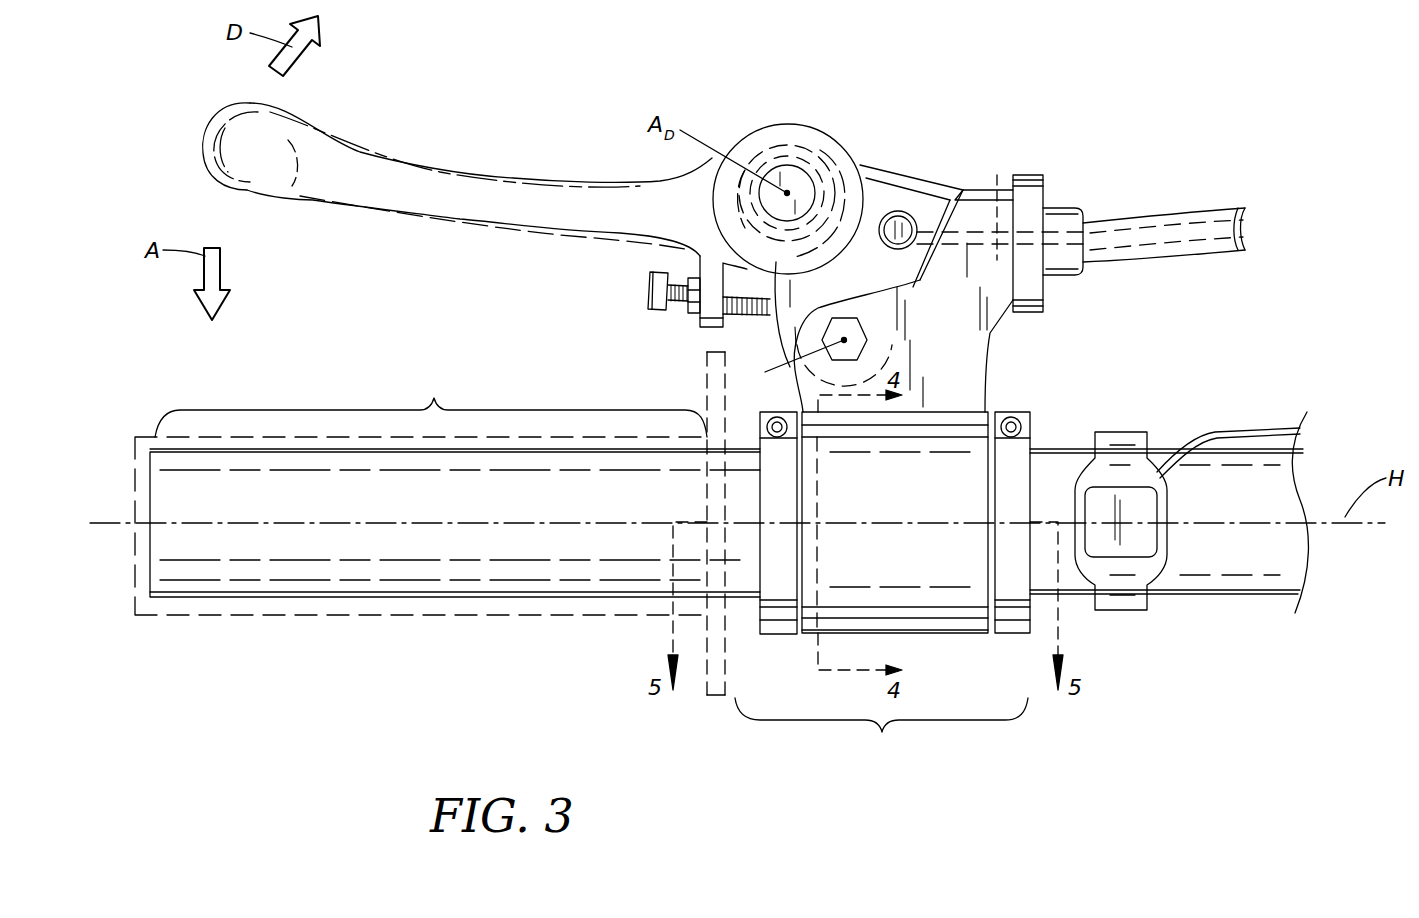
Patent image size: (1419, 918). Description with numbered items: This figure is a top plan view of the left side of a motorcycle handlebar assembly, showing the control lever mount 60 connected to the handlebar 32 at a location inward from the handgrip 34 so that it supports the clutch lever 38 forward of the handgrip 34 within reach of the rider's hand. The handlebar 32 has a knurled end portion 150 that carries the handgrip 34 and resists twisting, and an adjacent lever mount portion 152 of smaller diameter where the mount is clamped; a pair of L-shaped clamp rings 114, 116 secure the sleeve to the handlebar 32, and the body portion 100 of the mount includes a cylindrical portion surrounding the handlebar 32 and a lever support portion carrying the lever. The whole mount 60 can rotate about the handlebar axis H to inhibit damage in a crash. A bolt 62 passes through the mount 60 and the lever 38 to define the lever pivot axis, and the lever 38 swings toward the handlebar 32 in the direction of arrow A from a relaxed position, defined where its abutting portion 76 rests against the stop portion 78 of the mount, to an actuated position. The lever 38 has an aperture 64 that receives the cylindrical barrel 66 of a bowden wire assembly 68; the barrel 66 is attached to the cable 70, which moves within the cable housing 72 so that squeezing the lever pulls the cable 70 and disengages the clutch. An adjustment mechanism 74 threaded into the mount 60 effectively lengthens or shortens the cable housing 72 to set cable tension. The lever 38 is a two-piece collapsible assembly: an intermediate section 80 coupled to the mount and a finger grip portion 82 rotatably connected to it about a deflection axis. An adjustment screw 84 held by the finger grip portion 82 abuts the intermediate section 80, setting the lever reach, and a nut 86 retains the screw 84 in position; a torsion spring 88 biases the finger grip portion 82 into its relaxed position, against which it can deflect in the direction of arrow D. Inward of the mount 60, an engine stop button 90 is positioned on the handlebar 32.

The handlebar 32 is at (1255, 600).
The handgrip 34 is at (402, 618).
The clutch lever 38 is at (541, 110).
The control lever mount 60 is at (1052, 385).
The bolt 62 is at (880, 322).
The aperture 64 is at (898, 211).
The cable end barrel 66 is at (914, 214).
The bowden wire assembly 68 is at (1180, 180).
The cable 70 is at (1018, 178).
The cable housing 72 is at (1208, 258).
The adjustment mechanism 74 is at (1046, 183).
The abutting portion 76 is at (940, 210).
The stop portion 78 is at (985, 235).
The intermediate section 80 is at (866, 166).
The finger grip portion 82 is at (420, 160).
The adjustment screw 84 is at (650, 285).
The nut 86 is at (690, 305).
The torsion spring 88 is at (793, 135).
The engine stop button 90 is at (1165, 525).
The body portion 100 is at (1005, 360).
The clamp ring 114 is at (1016, 610).
The clamp ring 116 is at (773, 628).
The knurled end portion 150 is at (431, 405).
The lever mount portion 152 is at (881, 727).